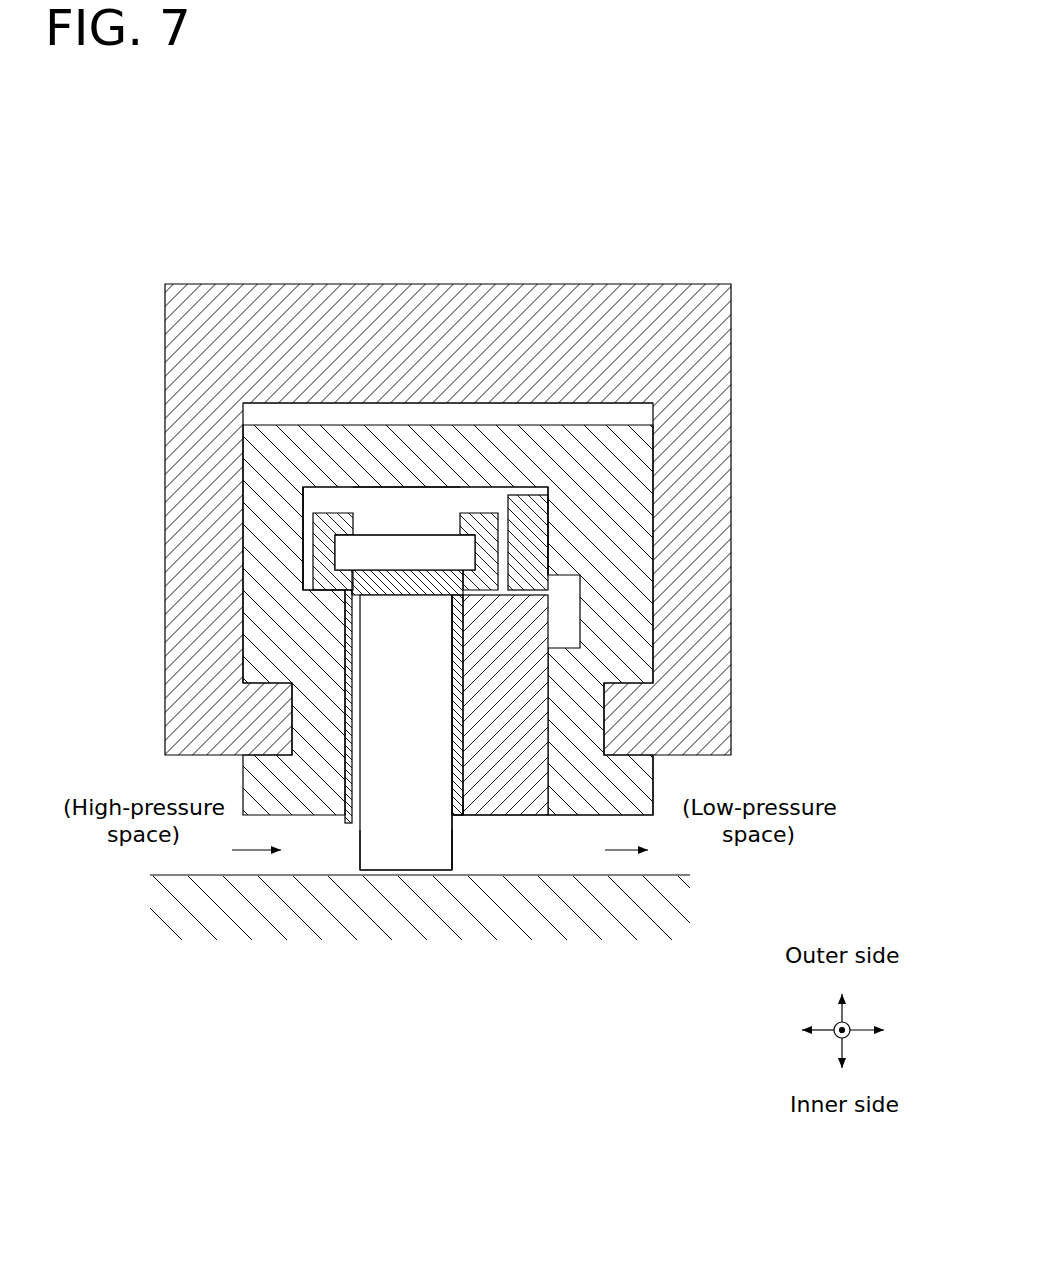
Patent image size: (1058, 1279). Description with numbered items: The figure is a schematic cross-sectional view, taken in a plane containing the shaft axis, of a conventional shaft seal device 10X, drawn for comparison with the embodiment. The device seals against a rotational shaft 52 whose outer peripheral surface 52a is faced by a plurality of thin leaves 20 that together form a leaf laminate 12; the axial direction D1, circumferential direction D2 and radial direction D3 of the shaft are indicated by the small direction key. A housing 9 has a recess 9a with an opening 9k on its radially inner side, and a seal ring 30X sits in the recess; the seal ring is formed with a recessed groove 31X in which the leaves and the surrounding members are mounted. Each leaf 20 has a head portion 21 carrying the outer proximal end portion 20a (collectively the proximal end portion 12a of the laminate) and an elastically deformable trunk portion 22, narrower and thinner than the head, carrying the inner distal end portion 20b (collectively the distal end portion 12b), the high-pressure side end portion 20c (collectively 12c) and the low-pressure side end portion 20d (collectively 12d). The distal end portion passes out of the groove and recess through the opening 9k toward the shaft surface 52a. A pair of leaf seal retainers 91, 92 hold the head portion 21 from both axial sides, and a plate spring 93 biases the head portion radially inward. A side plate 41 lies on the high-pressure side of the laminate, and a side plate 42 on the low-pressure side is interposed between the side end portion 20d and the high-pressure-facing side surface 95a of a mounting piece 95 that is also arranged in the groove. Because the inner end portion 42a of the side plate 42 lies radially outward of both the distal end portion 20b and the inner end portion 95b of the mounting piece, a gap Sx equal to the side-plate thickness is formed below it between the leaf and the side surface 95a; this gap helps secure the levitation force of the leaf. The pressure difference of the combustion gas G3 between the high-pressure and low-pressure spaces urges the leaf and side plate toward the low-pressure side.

The conventional shaft seal device 10X is at (675, 183).
The housing 9 is at (734, 318).
The recess 9a is at (632, 419).
The opening 9k is at (600, 772).
The seal ring 30X is at (657, 447).
The recessed groove 31X is at (488, 490).
The leaf seal retainer 91 is at (306, 546).
The leaf seal retainer 92 is at (502, 540).
The plate spring 93 is at (405, 479).
The mounting piece 95 is at (585, 602).
The side surface 95a is at (462, 796).
The inner end portion 95b is at (497, 818).
The head portion 21 is at (390, 533).
The leaf 20 is at (548, 653).
The leaf laminate 12 is at (357, 873).
The proximal end portion 20a is at (453, 379).
The proximal end portion 12a is at (430, 533).
The distal end portion 20b is at (408, 976).
The distal end portion 12b is at (403, 877).
The side end portion 20c is at (331, 944).
The side end portion 12c is at (352, 877).
The side end portion 20d is at (515, 914).
The side end portion 12d is at (458, 878).
The trunk portion 22 is at (434, 716).
The side plate 41 is at (343, 652).
The side plate 42 is at (466, 668).
The inner end portion 42a is at (455, 768).
The combustion gas G3 is at (266, 846).
The gap Sx is at (460, 826).
The rotational shaft 52 is at (690, 908).
The outer peripheral surface 52a is at (692, 875).
The axial direction D1 is at (868, 1026).
The circumferential direction D2 is at (836, 1037).
The radial direction D3 is at (838, 1008).